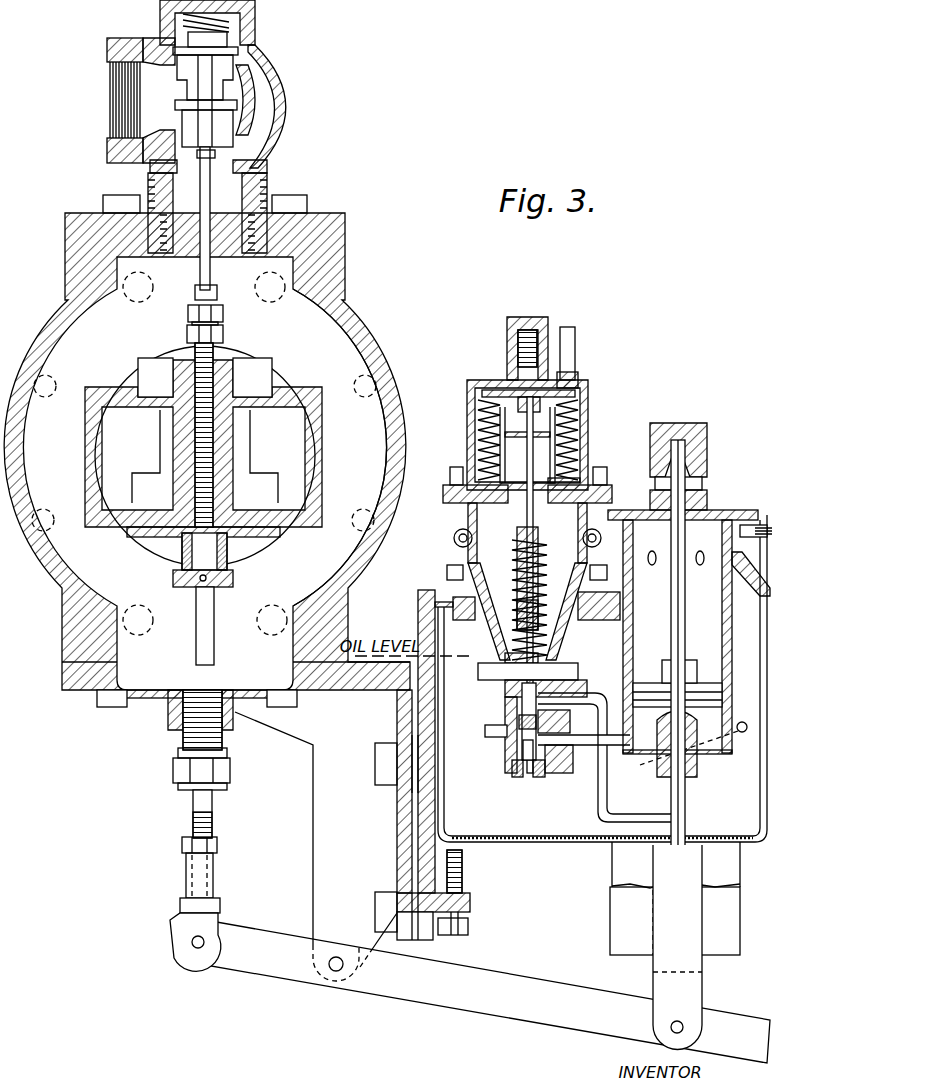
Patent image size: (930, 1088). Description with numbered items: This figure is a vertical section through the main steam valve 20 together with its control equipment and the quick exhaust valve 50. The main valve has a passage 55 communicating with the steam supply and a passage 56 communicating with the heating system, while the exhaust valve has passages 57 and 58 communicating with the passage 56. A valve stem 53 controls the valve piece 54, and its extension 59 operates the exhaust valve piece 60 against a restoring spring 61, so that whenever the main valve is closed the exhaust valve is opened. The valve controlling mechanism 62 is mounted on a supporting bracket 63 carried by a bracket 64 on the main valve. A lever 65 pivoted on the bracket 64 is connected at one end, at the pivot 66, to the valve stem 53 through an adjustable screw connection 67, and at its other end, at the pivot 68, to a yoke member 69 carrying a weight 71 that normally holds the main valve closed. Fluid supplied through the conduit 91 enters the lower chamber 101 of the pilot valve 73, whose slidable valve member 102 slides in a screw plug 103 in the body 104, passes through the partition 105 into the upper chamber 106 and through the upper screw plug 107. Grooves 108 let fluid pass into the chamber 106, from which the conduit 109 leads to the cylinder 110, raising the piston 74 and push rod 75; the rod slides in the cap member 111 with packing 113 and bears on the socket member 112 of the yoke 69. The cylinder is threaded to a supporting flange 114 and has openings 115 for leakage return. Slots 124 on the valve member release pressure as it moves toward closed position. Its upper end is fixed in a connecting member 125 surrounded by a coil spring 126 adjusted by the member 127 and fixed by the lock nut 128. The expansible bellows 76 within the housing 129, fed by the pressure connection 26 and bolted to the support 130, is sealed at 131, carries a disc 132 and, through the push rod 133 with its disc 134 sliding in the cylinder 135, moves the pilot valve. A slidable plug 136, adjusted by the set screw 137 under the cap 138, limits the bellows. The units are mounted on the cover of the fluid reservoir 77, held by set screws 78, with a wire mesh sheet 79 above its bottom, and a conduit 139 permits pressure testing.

The valve 20 is at (375, 318).
The pressure connection 26 is at (573, 345).
The quick exhaust valve 50 is at (293, 74).
The valve stem 53 is at (197, 802).
The valve piece 54 is at (162, 540).
The passage 55 is at (292, 453).
The passage 56 is at (350, 358).
The passage 57 is at (252, 150).
The passage 58 is at (262, 188).
The valve stem extension 59 is at (195, 190).
The valve piece 60 is at (225, 60).
The restoring spring 61 is at (183, 28).
The valve controlling mechanism 62 is at (433, 581).
The supporting bracket 63 is at (418, 620).
The bracket 64 is at (302, 728).
The lever 65 is at (392, 988).
The pivotal connection 66 is at (185, 948).
The adjustable screw connection 67 is at (220, 845).
The pivotal connection 68 is at (682, 1025).
The yoke member 69 is at (705, 430).
The weight 71 is at (610, 931).
The pilot valve 73 is at (497, 715).
The piston 74 is at (710, 700).
The push rod 75 is at (724, 512).
The expansible bellows 76 is at (580, 418).
The fluid reservoir 77 is at (446, 800).
The set screw 78 is at (463, 887).
The wire mesh sheet 79 is at (572, 836).
The fluid conduit 91 is at (742, 733).
The lower chamber 101 is at (523, 742).
The slidable valve member 102 is at (520, 778).
The screw plug 103 is at (540, 778).
The pilot valve body 104 is at (553, 762).
The partition 105 is at (512, 712).
The upper chamber 106 is at (503, 700).
The screw plug 107 is at (560, 683).
The longitudinal grooves 108 is at (528, 735).
The conduit 109 is at (594, 697).
The cylinder 110 is at (727, 680).
The cap member 111 is at (760, 525).
The socket member 112 is at (687, 423).
The packing means 113 is at (706, 497).
The supporting flange 114 is at (745, 575).
The openings 115 is at (652, 567).
The longitudinal slots 124 is at (550, 665).
The connecting member 125 is at (546, 608).
The coil spring 126 is at (513, 580).
The adjusting member 127 is at (541, 560).
The lock nut 128 is at (535, 540).
The housing 129 is at (590, 430).
The support 130 is at (470, 515).
The seal 131 is at (577, 478).
The disc member 132 is at (575, 388).
The push rod 133 is at (524, 440).
The disc 134 is at (505, 425).
The cylinder 135 is at (480, 455).
The slidable plug 136 is at (518, 350).
The set screw 137 is at (549, 330).
The cap 138 is at (532, 316).
The conduit 139 is at (525, 722).